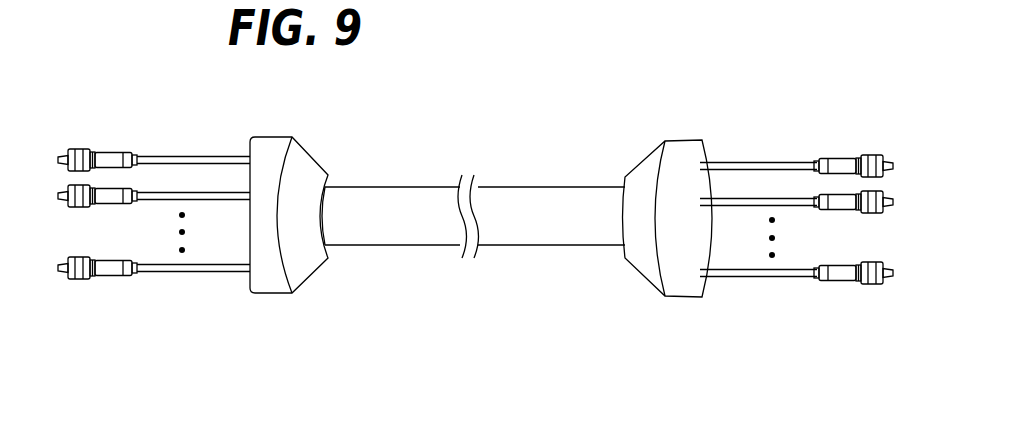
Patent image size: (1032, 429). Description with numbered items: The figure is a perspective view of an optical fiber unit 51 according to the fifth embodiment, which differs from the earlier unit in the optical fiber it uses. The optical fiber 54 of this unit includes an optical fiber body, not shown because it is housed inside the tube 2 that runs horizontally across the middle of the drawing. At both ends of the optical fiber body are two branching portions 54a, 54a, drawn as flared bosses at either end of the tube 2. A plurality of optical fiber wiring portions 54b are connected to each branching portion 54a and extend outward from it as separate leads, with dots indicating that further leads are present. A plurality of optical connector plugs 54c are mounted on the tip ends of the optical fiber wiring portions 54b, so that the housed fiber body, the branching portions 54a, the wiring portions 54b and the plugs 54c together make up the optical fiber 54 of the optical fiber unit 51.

The optical fiber unit 51 is at (773, 103).
The tube 2 is at (557, 235).
The optical fiber 54 is at (852, 118).
The branching portion 54a is at (272, 285).
The optical fiber wiring portion 54b is at (208, 272).
The optical connector plug 54c is at (110, 272).